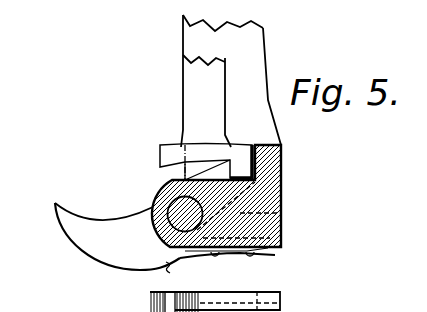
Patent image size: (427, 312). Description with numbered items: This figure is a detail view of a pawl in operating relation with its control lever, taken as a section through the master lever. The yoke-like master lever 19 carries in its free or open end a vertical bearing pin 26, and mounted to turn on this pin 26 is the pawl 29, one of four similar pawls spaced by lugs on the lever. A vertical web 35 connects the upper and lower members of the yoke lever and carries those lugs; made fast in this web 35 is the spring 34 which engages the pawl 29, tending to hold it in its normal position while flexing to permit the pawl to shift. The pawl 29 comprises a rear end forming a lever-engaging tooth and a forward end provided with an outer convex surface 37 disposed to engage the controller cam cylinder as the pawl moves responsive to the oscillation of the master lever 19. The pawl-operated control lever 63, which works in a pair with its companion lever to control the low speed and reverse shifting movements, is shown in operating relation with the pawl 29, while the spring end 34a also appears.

The master lever 19 is at (263, 49).
The control lever 63 is at (197, 95).
The vertical web 35 is at (281, 181).
The bearing pin 26 is at (171, 206).
The pawl 29 is at (83, 242).
The convex surface 37 is at (117, 267).
The spring 34 is at (228, 254).
The spring arm 34a is at (281, 213).